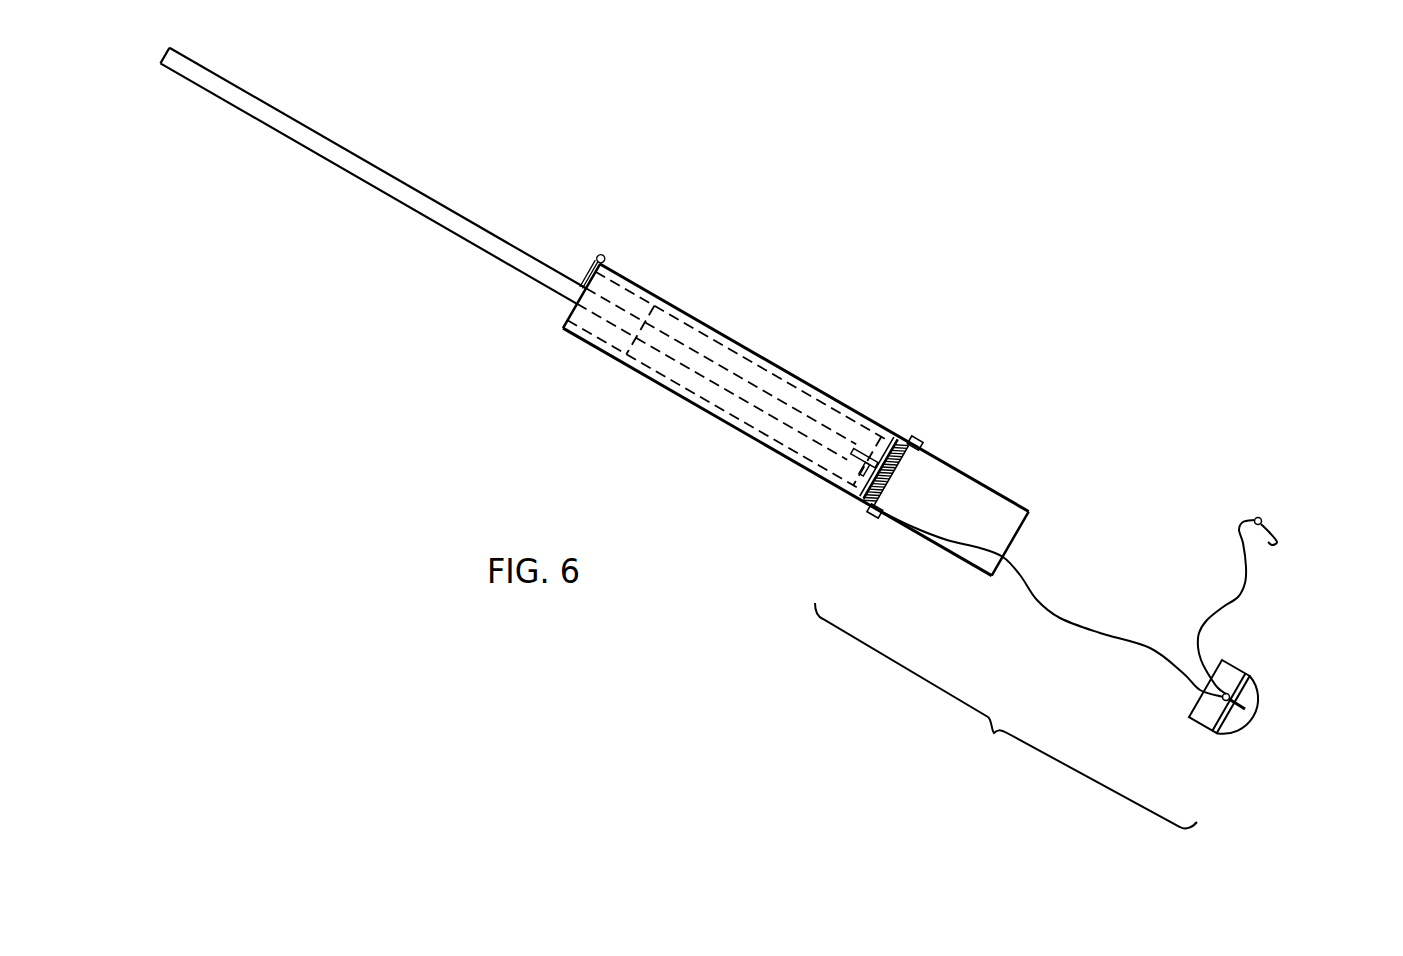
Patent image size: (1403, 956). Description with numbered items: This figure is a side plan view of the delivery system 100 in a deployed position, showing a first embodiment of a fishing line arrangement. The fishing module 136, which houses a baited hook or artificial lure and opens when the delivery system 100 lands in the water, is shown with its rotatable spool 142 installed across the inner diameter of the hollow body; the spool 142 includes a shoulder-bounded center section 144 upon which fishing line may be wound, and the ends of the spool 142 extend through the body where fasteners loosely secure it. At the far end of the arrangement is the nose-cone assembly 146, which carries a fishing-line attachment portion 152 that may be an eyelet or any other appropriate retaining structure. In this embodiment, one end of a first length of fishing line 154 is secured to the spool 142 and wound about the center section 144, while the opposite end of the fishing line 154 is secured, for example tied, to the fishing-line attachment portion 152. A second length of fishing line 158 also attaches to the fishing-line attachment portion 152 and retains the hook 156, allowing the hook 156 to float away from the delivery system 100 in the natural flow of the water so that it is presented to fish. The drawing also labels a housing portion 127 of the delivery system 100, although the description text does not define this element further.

The delivery system 100 is at (567, 413).
The housing 127 is at (695, 311).
The rotatable spool 142 is at (933, 434).
The shoulder-bounded center section 144 is at (921, 469).
The fishing module 136 is at (1006, 715).
The first length of fishing line 154 is at (1063, 621).
The second length of fishing line 158 is at (1232, 602).
The hook 156 is at (1275, 549).
The fishing-line attachment portion 152 is at (1250, 701).
The nose-cone assembly 146 is at (1263, 731).